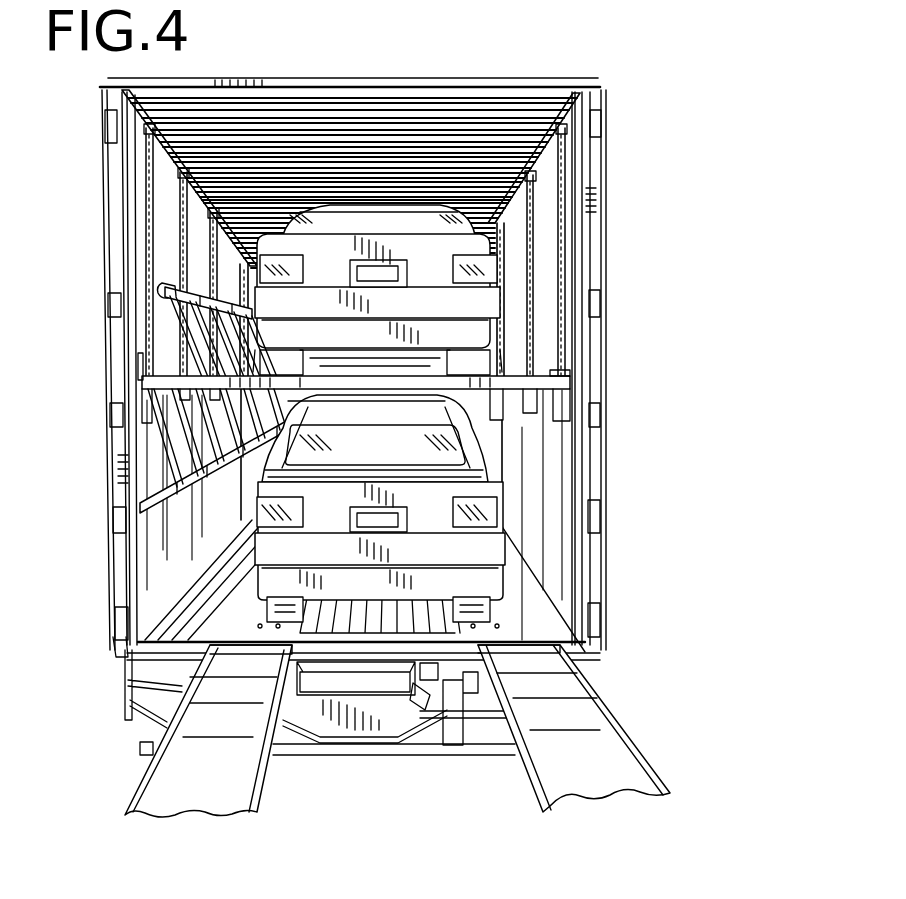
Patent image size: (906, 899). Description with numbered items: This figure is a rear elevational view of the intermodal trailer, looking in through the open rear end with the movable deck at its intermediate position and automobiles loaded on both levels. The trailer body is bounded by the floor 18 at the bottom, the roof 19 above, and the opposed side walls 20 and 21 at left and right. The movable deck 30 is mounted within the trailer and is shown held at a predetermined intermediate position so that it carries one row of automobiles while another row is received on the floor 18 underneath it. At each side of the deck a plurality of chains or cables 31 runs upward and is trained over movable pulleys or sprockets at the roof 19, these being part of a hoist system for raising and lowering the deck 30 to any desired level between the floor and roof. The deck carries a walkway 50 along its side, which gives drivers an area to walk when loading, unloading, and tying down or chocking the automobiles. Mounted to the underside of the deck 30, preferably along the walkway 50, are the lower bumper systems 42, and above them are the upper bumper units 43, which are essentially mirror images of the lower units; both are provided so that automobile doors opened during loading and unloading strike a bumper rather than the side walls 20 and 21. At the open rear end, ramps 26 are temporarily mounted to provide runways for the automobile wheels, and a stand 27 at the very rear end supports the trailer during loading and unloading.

The floor 18 is at (333, 625).
The roof 19 is at (455, 112).
The side wall 20 is at (162, 532).
The side wall 21 is at (540, 487).
The ramps 26 is at (230, 787).
The stand 27 is at (383, 768).
The movable deck 30 is at (489, 405).
The chains or cables 31 is at (210, 268).
The lower bumper system 42 is at (261, 462).
The upper bumper unit 43 is at (253, 308).
The walkway 50 is at (172, 378).